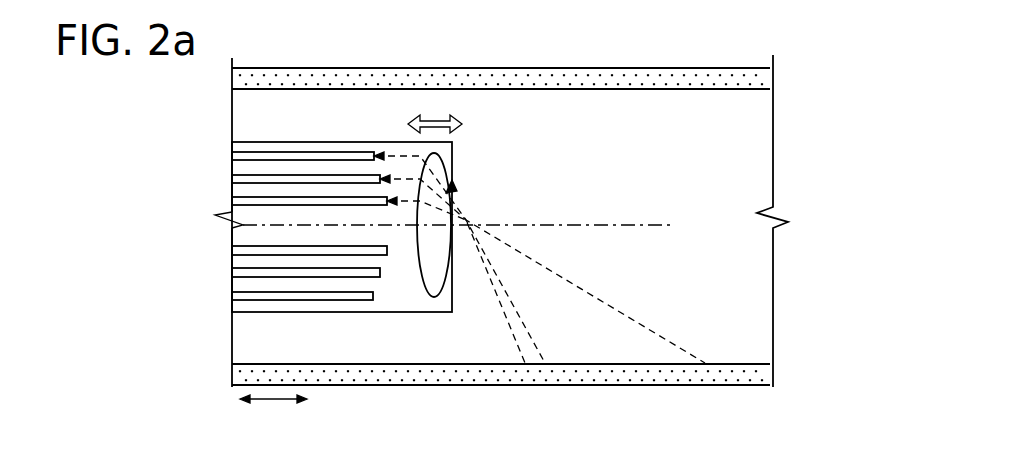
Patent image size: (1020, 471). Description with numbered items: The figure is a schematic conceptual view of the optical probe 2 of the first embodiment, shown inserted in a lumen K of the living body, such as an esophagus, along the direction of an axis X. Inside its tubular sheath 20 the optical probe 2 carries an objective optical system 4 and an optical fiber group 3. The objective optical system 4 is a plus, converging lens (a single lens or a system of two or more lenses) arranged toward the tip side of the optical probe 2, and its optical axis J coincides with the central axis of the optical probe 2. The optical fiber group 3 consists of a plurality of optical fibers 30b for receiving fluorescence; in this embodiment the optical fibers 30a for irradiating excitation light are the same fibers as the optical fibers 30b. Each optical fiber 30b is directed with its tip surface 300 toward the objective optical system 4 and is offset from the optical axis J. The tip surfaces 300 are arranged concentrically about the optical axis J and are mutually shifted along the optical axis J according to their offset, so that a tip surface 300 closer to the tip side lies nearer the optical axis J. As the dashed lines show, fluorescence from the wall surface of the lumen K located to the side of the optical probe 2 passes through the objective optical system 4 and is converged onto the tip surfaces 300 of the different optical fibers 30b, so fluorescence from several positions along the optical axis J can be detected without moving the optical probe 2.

The optical probe 2 is at (545, 106).
The lumen K is at (740, 90).
The tubular sheath 20 is at (360, 141).
The optical fiber group 3 is at (143, 150).
The optical fiber for receiving the fluorescence 30b is at (232, 200).
The optical fiber for irradiating the excitation light 30a is at (291, 256).
The tip surface 300 is at (381, 272).
The objective optical system 4 is at (435, 294).
The optical axis J is at (466, 227).
The axis X is at (273, 414).